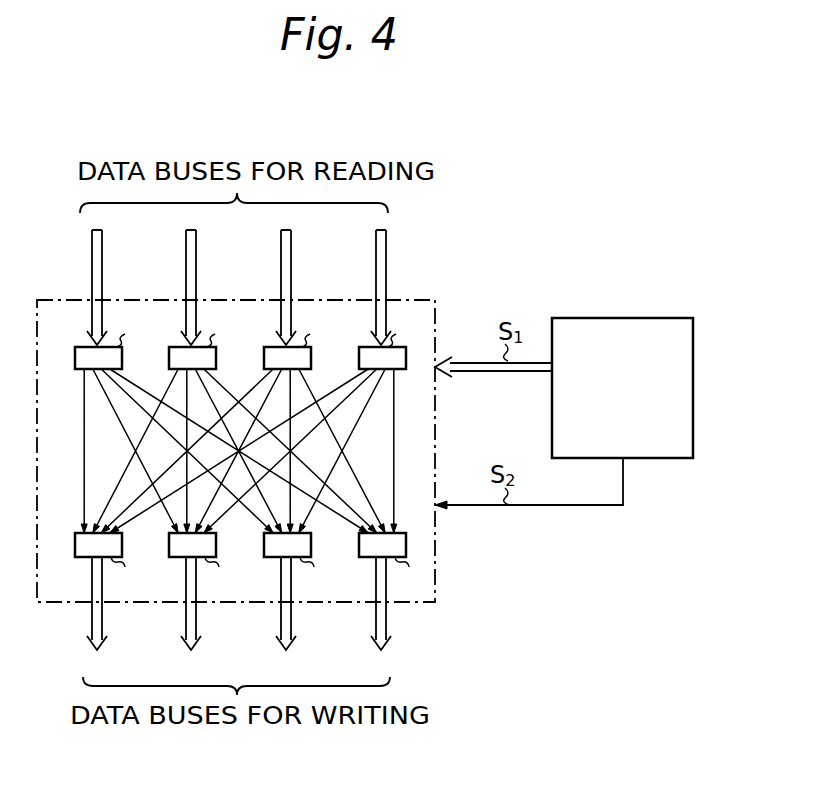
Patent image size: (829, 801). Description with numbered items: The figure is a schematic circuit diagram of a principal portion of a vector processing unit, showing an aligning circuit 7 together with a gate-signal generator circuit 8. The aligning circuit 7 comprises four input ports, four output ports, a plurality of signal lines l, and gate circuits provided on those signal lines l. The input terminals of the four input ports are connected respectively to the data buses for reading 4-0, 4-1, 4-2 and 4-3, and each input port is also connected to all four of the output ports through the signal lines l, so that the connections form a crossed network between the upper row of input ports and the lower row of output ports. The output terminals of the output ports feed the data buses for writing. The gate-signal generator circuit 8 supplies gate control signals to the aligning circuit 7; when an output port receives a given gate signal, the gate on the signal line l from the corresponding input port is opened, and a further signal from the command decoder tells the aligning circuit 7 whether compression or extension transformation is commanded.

The data bus for reading 4-0 is at (91, 266).
The data bus for reading 4-1 is at (185, 266).
The data bus for reading 4-2 is at (280, 266).
The data bus for reading 4-3 is at (375, 266).
The aligning circuit 7 is at (235, 479).
The gate-signal generator circuit 8 is at (640, 318).
The signal lines l is at (83, 456).